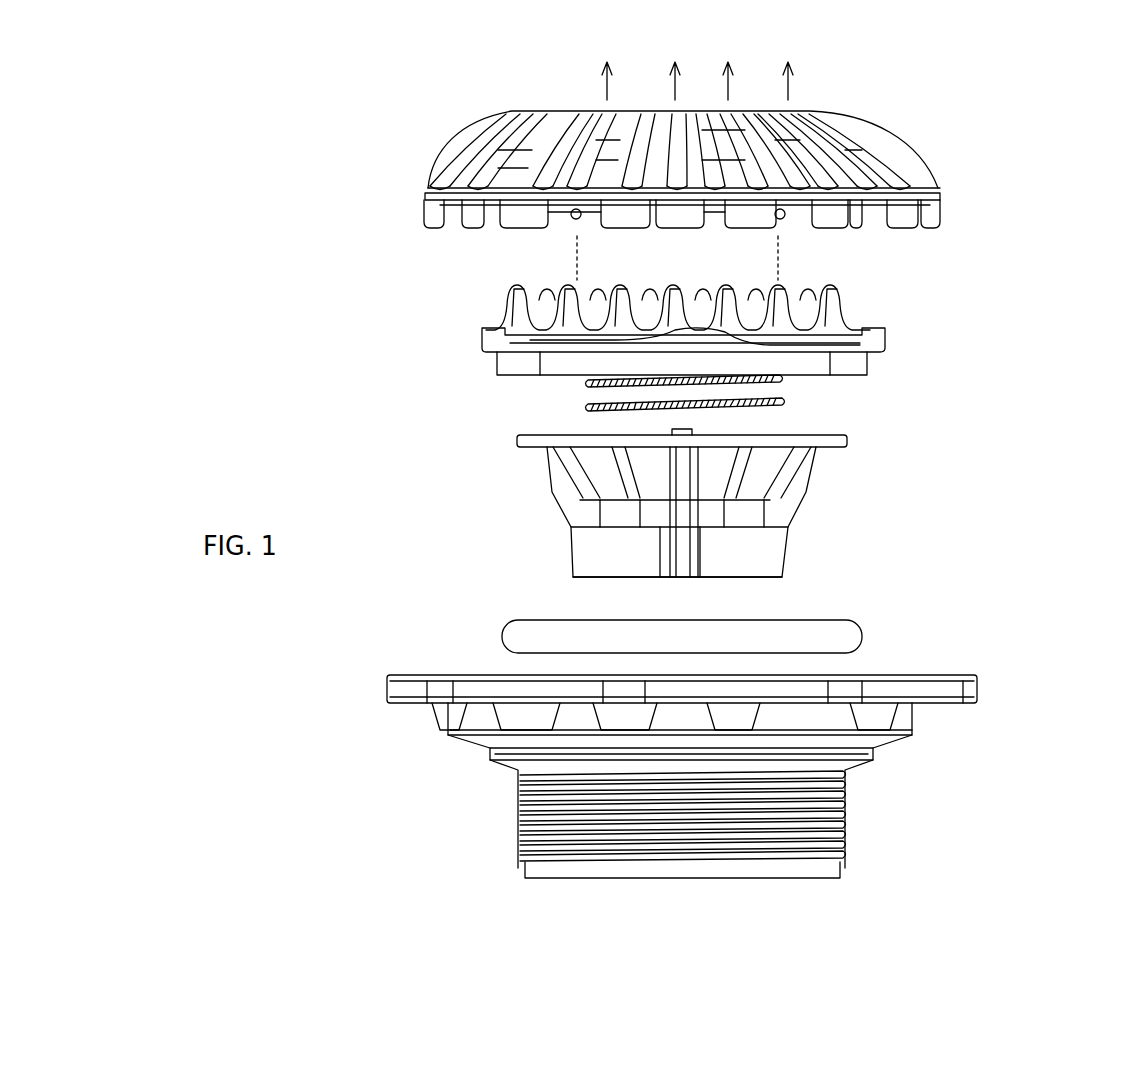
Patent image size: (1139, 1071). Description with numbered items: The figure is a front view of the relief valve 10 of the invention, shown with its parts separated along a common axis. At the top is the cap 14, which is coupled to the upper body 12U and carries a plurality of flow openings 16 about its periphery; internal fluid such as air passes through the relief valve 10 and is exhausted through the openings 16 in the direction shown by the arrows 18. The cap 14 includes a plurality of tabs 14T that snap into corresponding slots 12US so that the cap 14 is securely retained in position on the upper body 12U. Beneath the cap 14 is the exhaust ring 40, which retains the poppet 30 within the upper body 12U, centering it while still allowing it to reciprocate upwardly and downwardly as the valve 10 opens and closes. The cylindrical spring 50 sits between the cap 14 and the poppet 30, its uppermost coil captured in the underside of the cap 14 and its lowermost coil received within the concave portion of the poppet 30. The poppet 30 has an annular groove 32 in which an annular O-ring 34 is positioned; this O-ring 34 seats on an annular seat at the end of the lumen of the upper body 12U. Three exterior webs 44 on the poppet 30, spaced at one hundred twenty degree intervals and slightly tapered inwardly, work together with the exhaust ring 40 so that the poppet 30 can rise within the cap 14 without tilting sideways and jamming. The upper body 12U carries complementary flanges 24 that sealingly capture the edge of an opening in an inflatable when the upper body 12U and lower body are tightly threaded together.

The relief valve 10 is at (1034, 154).
The cap 14 is at (445, 161).
The flow openings 16 is at (812, 148).
The arrows 18 is at (672, 85).
The tabs 14T is at (620, 230).
The exhaust ring 40 is at (885, 330).
The cylindrical spring 50 is at (790, 233).
The poppet 30 is at (815, 490).
The annular groove 32 is at (522, 448).
The exterior webs 44 is at (768, 553).
The annular O-ring 34 is at (880, 622).
The upper body 12U is at (938, 720).
The slots 12US is at (520, 722).
The flanges 24 is at (883, 746).